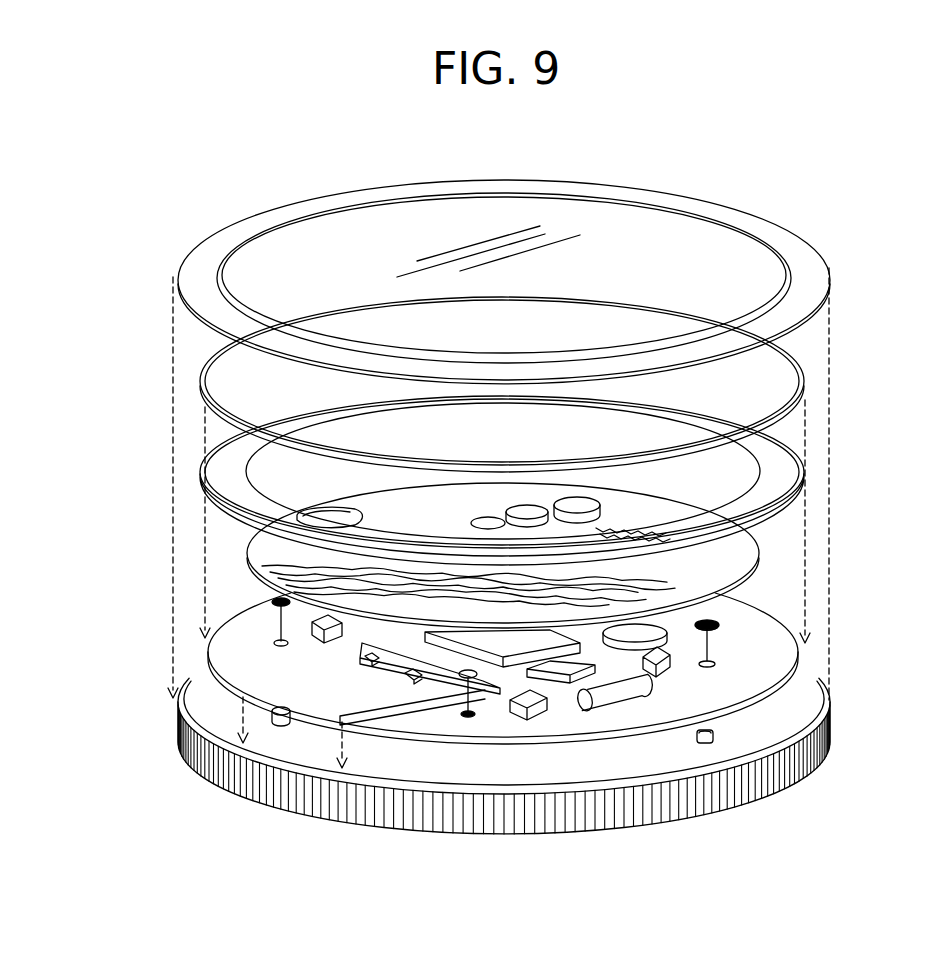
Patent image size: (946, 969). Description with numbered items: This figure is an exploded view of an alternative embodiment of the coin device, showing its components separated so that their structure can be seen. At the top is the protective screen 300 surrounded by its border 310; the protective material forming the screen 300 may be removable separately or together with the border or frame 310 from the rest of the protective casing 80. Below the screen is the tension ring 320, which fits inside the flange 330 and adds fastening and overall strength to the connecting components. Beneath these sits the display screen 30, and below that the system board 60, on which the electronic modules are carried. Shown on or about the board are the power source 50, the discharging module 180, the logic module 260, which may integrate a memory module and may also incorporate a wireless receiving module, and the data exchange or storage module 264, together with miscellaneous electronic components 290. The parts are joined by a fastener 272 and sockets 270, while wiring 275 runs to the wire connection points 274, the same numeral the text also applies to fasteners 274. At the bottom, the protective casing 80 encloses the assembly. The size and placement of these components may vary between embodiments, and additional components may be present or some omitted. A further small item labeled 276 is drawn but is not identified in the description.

The protective screen 300 is at (636, 236).
The border 310 is at (794, 245).
The tension ring 320 is at (804, 376).
The power source 50 is at (783, 479).
The flange 330 is at (784, 477).
The display screen 30 is at (730, 563).
The discharging module 180 is at (728, 617).
The system board 60 is at (775, 655).
The protective casing 80 is at (822, 737).
The fastener 272 is at (720, 630).
The sockets 270 is at (716, 741).
The screw tip 276 is at (690, 664).
The miscellaneous electronic components 290 is at (608, 700).
The logic module 260 is at (553, 676).
The data exchange or storage module 264 is at (505, 648).
The wire connection points 274 is at (400, 660).
The wiring 275 is at (308, 630).